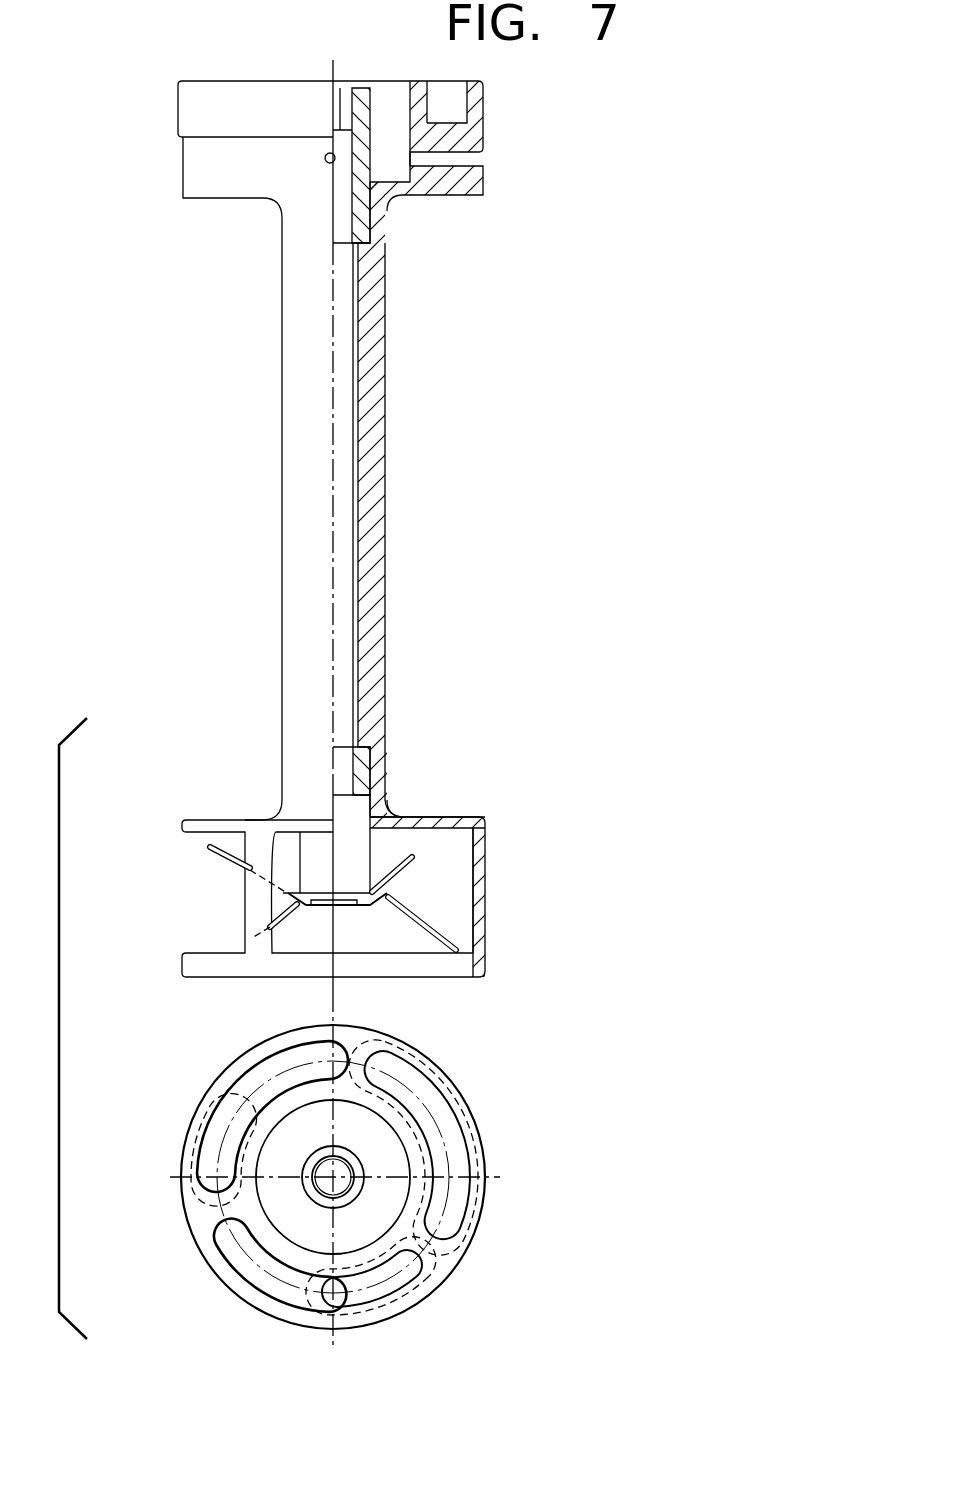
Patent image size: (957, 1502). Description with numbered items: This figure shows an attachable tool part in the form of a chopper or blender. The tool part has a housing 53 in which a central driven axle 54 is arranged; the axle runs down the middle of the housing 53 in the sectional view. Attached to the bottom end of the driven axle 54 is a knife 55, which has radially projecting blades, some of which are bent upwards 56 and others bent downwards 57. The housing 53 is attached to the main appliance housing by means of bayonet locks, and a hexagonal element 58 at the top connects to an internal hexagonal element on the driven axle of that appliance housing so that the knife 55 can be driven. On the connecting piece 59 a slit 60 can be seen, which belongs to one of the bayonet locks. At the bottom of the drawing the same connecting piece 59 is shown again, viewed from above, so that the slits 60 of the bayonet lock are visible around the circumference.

The housing 53 is at (380, 475).
The driven axle 54 is at (343, 548).
The knife 55 is at (353, 920).
The blades bent upwards 56 is at (228, 862).
The blades bent downwards 57 is at (445, 930).
The hexagonal element 58 is at (337, 117).
The connecting piece 59 is at (168, 118).
The slit 60 is at (455, 106).